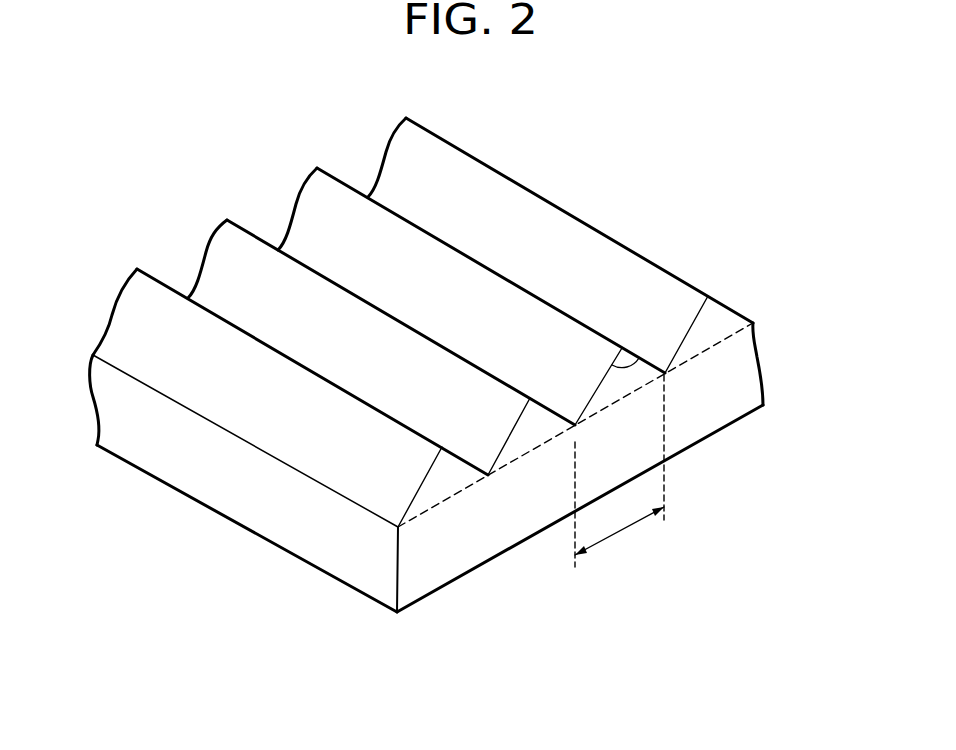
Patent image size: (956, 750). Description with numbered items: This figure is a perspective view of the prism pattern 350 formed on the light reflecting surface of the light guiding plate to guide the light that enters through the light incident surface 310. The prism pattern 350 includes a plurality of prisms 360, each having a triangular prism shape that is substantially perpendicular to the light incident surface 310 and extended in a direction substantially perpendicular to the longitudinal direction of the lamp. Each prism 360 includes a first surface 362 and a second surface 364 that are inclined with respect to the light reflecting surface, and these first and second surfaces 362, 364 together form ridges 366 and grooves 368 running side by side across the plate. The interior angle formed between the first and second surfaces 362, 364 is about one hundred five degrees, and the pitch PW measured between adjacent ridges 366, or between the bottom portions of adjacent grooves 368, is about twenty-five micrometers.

The light incident surface 310 is at (713, 403).
The prism pattern 350 is at (244, 343).
The prism 360 is at (437, 480).
The first surface 362 is at (413, 497).
The second surface 364 is at (500, 462).
The ridge 366 is at (333, 375).
The groove 368 is at (465, 460).
The pitch PW is at (619, 471).